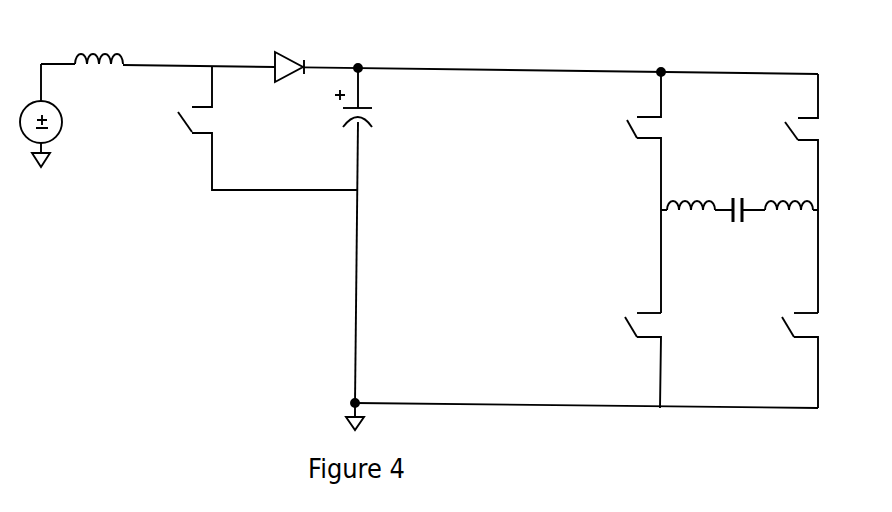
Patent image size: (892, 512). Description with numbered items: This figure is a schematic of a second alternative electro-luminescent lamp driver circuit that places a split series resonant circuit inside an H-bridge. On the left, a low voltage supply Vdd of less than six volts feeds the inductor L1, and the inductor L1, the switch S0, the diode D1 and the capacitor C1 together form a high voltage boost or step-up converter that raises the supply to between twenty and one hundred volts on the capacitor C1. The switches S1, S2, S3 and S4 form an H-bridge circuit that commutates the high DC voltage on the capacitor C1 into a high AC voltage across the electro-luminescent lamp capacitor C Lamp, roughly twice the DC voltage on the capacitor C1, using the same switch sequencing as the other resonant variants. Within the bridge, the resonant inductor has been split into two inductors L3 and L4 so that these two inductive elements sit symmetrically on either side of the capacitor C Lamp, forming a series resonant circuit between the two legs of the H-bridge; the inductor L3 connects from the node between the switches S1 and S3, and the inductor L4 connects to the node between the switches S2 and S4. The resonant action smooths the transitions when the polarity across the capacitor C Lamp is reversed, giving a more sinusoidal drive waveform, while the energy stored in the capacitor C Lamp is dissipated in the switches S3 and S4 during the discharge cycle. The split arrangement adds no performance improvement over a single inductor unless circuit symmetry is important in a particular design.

The inductor L1 is at (99, 42).
The supply voltage Vdd is at (70, 134).
The switch S0 is at (262, 128).
The diode D1 is at (292, 51).
The capacitor C1 is at (377, 235).
The switch S1 is at (639, 192).
The switch S2 is at (795, 193).
The switch S3 is at (638, 344).
The switch S4 is at (795, 344).
The inductor L3 is at (691, 185).
The inductor L4 is at (789, 185).
The electro-luminescent lamp capacitor C Lamp is at (747, 228).